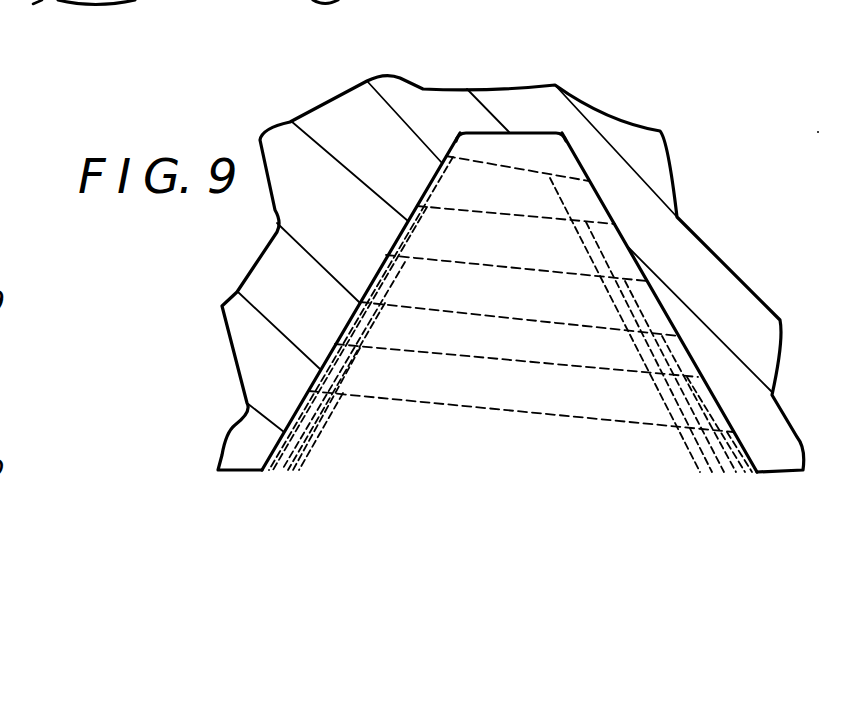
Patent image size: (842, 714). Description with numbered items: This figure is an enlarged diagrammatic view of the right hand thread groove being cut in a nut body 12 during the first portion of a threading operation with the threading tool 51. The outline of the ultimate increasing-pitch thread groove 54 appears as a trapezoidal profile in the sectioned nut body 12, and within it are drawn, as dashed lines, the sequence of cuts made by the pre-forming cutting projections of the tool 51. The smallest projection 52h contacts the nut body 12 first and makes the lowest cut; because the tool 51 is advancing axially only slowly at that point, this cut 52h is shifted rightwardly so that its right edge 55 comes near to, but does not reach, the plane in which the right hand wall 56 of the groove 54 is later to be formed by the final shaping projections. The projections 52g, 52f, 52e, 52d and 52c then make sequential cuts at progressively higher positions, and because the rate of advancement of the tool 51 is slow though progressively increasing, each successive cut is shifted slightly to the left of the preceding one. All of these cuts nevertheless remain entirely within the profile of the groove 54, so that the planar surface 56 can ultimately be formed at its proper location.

The nut body 12 is at (422, 98).
The threading tool 51 is at (19, 24).
The thread groove 54 is at (534, 133).
The right edge of cut 52h 55 is at (744, 450).
The right hand wall 56 is at (602, 207).
The pre-forming cutting projection (cut) 52c is at (492, 157).
The pre-forming cutting projection (cut) 52d is at (470, 208).
The pre-forming cutting projection (cut) 52e is at (448, 262).
The pre-forming cutting projection (cut) 52f is at (468, 310).
The pre-forming cutting projection (cut) 52g is at (452, 357).
The smallest cutting projection (cut) 52h is at (447, 404).